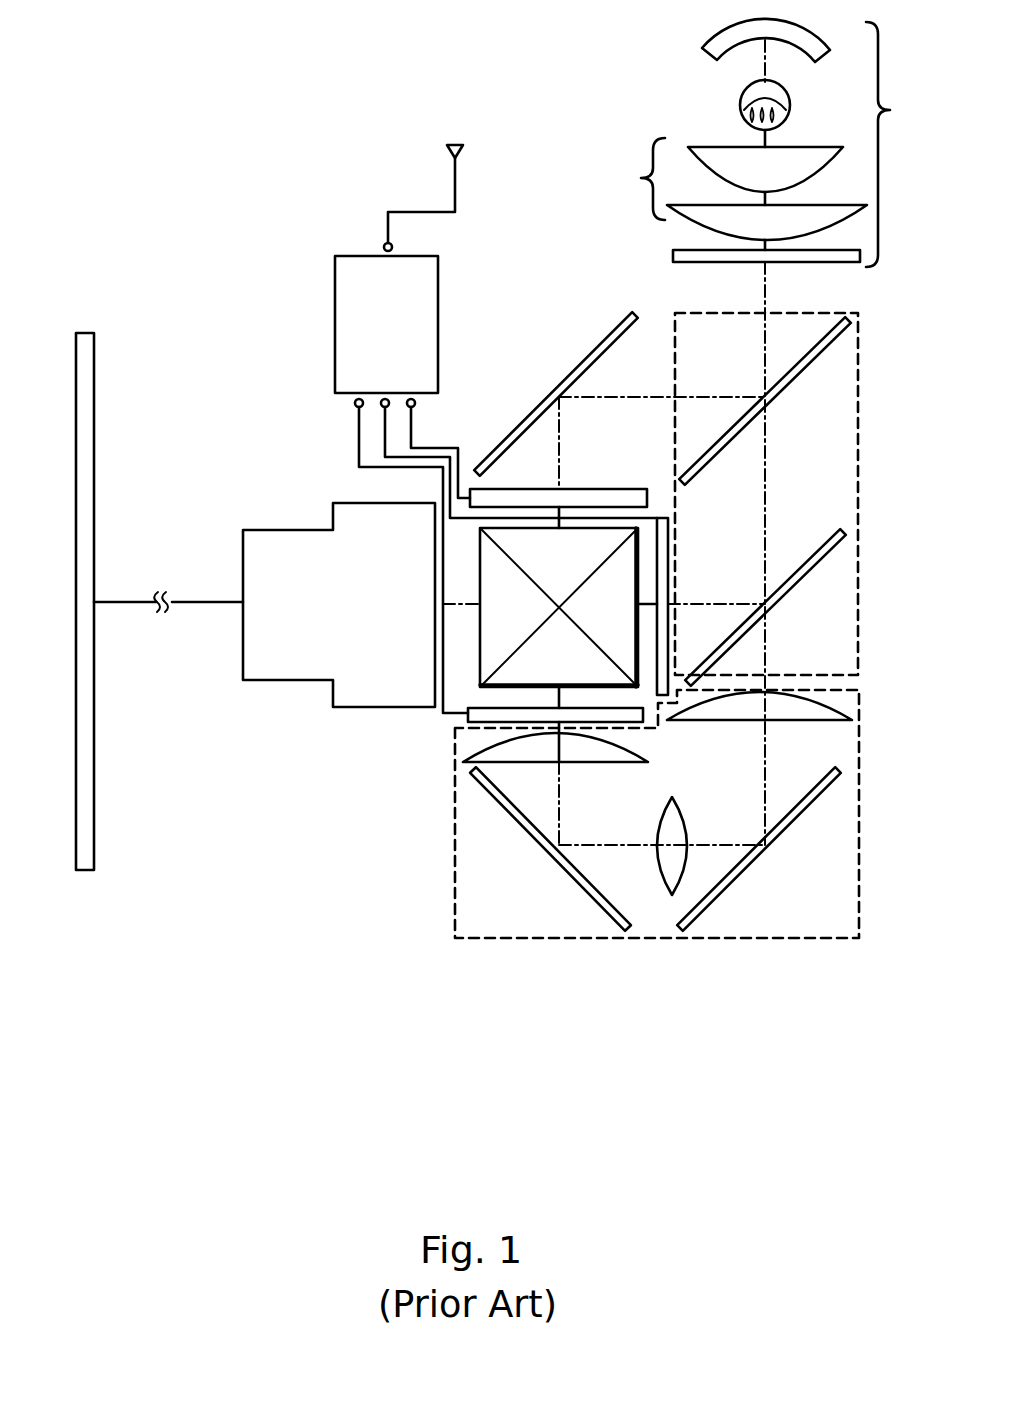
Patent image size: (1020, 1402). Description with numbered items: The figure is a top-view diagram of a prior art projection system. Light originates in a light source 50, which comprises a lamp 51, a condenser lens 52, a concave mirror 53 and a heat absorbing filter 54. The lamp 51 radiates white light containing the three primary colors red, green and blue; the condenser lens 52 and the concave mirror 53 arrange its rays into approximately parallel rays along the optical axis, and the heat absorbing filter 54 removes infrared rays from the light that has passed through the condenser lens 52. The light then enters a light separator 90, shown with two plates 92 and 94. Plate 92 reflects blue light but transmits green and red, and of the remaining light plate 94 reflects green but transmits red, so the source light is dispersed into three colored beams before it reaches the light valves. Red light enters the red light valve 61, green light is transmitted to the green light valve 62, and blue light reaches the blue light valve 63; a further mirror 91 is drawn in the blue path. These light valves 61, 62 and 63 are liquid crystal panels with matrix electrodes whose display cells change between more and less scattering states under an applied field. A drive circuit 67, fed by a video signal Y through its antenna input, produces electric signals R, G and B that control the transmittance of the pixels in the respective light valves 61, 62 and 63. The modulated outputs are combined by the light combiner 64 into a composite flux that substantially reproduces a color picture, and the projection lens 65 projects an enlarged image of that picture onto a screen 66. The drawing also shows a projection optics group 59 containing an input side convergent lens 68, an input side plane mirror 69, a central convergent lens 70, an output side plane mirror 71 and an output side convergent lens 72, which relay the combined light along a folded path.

The light source 50 is at (768, 137).
The lamp 51 is at (757, 90).
The condenser lens 52 is at (739, 189).
The concave mirror 53 is at (716, 46).
The heat absorbing filter 54 is at (673, 256).
The projection optical unit 59 is at (845, 893).
The red light valve 61 is at (588, 718).
The green light valve 62 is at (661, 542).
The blue light valve 63 is at (610, 495).
The light combiner 64 is at (521, 601).
The projection lens 65 is at (307, 547).
The screen 66 is at (95, 343).
The drive circuit 67 is at (335, 290).
The input side convergent lens 68 is at (827, 722).
The input side plane mirror 69 is at (815, 798).
The central convergent lens 70 is at (678, 830).
The output side plane mirror 71 is at (573, 872).
The output side convergent lens 72 is at (625, 755).
The light separator 90 is at (868, 392).
The mirror 91 is at (605, 340).
The plate 92 is at (778, 402).
The plate 94 is at (800, 593).